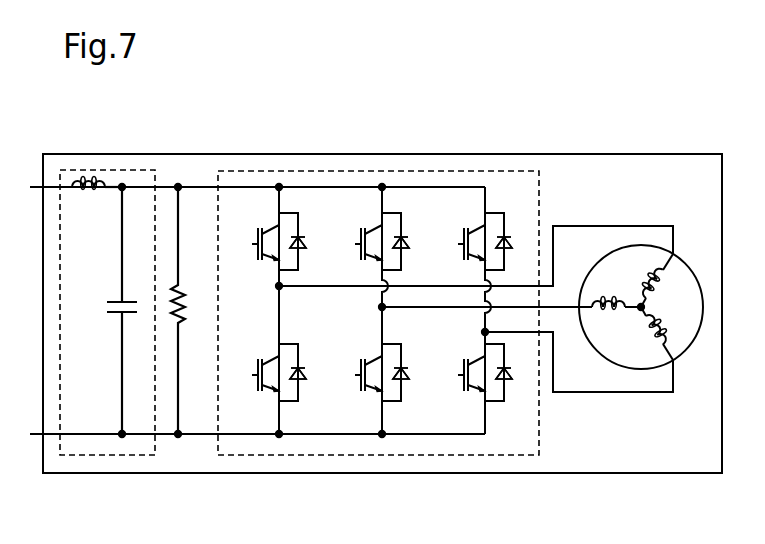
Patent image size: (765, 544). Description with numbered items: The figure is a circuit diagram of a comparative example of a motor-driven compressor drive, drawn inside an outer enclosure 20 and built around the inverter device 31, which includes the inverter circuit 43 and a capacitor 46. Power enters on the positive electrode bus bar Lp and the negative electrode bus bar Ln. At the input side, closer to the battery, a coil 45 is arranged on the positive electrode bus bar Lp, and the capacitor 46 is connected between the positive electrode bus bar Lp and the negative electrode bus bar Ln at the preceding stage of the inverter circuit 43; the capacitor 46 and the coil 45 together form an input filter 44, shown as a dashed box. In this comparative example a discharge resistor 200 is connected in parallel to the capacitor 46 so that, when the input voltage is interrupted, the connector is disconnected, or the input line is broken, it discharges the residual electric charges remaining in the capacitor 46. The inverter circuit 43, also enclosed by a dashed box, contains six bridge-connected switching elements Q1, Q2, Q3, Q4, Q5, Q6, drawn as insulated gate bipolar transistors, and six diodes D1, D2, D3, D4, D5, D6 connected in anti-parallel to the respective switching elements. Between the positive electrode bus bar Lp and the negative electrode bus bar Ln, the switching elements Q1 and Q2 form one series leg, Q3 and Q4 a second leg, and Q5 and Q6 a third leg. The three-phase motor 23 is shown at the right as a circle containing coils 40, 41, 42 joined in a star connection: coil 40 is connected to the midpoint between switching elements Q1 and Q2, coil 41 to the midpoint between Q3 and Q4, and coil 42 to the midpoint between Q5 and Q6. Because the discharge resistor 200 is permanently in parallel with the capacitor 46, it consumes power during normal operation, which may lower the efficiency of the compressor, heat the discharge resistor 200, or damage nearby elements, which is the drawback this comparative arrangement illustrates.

The power conversion device 20 is at (212, 154).
The positive electrode bus bar Lp is at (250, 186).
The negative electrode bus bar Ln is at (232, 435).
The input filter 44 is at (72, 170).
The coil 45 is at (100, 182).
The capacitor 46 is at (126, 301).
The discharge resistor 200 is at (178, 285).
The inverter device 31 is at (553, 190).
The inverter circuit 43 is at (396, 171).
The switching element Q1 is at (275, 224).
The switching element Q2 is at (275, 353).
The switching element Q3 is at (378, 224).
The switching element Q4 is at (378, 353).
The switching element Q5 is at (481, 224).
The switching element Q6 is at (477, 353).
The diode D1 is at (311, 242).
The diode D2 is at (303, 380).
The diode D3 is at (414, 242).
The diode D4 is at (406, 380).
The diode D5 is at (517, 242).
The diode D6 is at (509, 380).
The three-phase motor 23 is at (692, 271).
The coil 40 is at (667, 282).
The coil 41 is at (598, 302).
The coil 42 is at (653, 342).